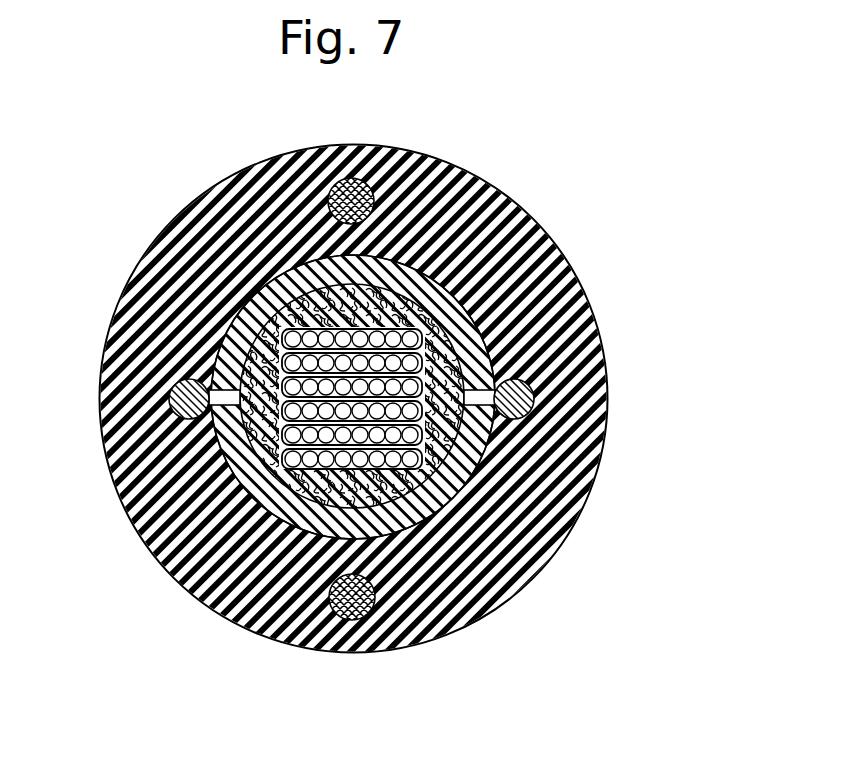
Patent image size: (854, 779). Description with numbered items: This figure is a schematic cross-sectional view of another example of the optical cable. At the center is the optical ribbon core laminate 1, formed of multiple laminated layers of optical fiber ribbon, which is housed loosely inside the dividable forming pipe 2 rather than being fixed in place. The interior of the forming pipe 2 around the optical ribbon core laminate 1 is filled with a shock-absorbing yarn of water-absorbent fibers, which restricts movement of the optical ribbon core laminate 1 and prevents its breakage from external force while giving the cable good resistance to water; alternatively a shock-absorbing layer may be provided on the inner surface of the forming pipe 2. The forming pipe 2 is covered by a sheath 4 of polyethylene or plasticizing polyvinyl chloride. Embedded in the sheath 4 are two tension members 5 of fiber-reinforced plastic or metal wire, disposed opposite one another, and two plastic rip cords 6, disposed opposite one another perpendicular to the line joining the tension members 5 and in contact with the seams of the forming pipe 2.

The optical ribbon core laminate 1 is at (455, 433).
The forming pipe 2 is at (257, 303).
The sheath 4 is at (512, 222).
The tension member 5 is at (340, 183).
The rip cord 6 is at (187, 415).